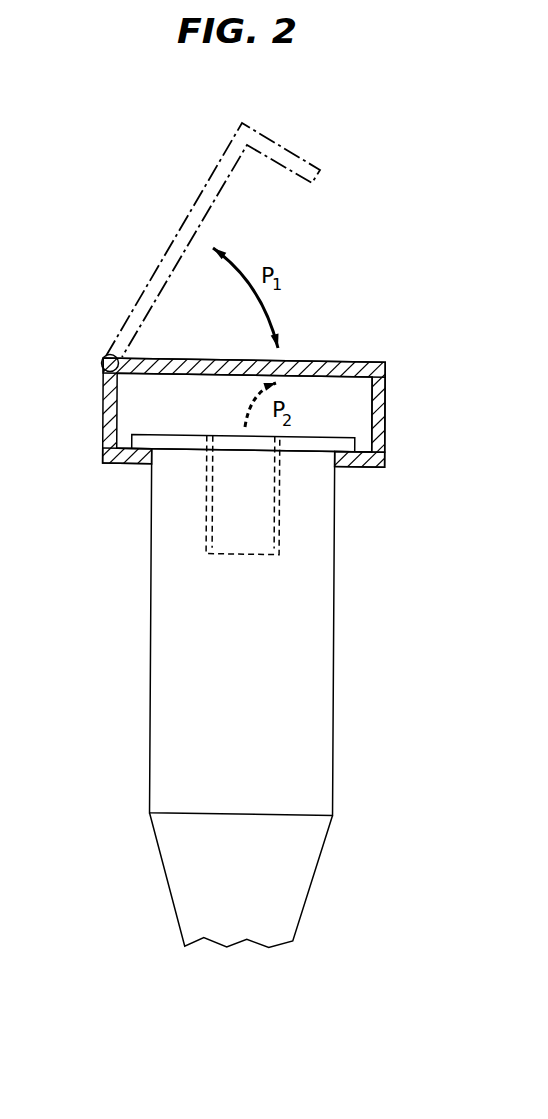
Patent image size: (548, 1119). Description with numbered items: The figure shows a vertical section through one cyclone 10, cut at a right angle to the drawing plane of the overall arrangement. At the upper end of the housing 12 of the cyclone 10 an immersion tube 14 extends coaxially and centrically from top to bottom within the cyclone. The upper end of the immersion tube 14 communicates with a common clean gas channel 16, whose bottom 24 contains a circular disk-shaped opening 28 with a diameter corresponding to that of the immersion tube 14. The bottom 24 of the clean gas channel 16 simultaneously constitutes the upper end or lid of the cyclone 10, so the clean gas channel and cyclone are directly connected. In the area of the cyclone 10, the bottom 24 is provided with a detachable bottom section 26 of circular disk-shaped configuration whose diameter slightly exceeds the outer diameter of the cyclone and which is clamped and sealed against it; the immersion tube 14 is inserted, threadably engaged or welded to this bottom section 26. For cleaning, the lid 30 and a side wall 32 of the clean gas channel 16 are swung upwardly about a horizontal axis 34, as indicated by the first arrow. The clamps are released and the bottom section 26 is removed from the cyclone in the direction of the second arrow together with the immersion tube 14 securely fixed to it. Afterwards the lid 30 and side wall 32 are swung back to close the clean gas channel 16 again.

The cyclone 10 is at (258, 744).
The housing 12 is at (150, 748).
The immersion tube 14 is at (207, 537).
The clean gas channel 16 is at (127, 411).
The bottom 24 is at (123, 462).
The detachable bottom section 26 is at (316, 444).
The circular disk-shaped opening 28 is at (238, 446).
The lid 30 is at (331, 358).
The side wall 32 is at (379, 394).
The horizontal axis 34 is at (102, 360).